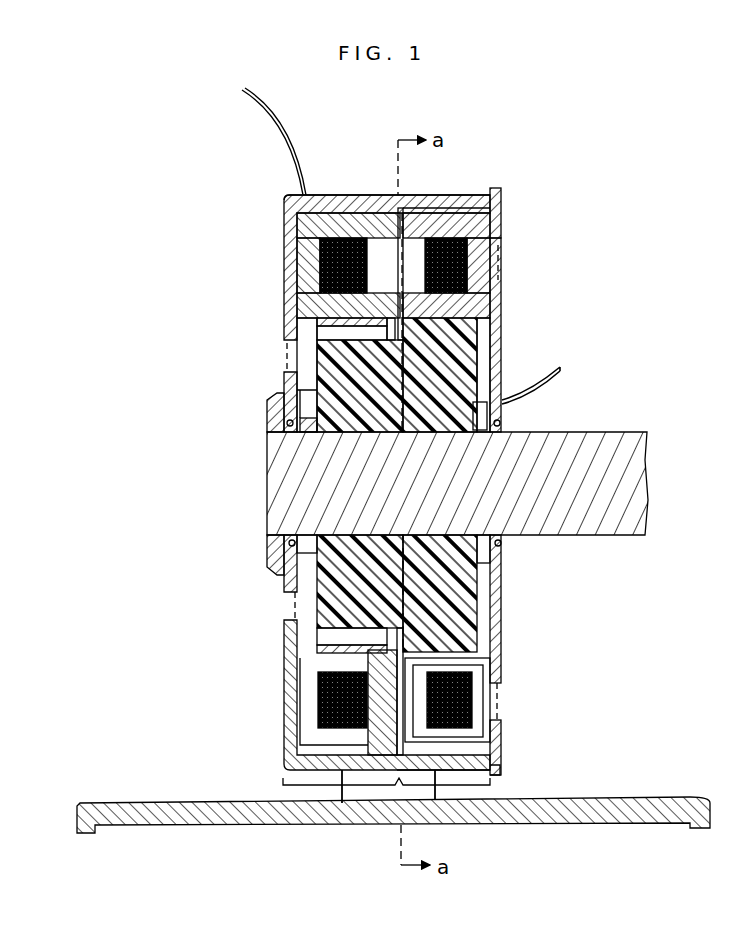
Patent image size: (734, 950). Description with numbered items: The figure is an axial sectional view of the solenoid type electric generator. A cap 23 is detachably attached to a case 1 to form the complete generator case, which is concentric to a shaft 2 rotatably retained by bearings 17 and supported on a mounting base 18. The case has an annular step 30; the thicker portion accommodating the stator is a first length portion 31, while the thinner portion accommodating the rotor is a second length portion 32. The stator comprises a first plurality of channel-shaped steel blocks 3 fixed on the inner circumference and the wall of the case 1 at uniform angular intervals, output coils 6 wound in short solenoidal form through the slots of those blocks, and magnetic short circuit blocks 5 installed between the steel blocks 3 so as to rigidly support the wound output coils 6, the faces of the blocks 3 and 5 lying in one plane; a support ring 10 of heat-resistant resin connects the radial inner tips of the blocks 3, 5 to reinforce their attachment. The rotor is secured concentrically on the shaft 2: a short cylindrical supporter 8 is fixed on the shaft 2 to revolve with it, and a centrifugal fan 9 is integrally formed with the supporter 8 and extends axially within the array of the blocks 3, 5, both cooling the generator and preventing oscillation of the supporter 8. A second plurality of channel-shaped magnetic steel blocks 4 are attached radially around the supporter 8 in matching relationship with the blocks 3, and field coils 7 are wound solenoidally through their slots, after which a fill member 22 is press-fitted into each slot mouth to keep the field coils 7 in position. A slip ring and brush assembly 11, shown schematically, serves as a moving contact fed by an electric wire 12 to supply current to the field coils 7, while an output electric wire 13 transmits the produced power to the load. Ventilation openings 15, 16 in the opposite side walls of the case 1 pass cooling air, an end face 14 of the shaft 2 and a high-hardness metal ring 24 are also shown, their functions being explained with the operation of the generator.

The case 1 is at (312, 203).
The shaft 2 is at (545, 437).
The first plurality of channel-shaped steel blocks 3 is at (337, 205).
The second plurality of channel-shaped magnetic steel blocks 4 is at (495, 257).
The magnetic short circuit blocks 5 is at (408, 265).
The output coils 6 is at (387, 267).
The field coils 7 is at (497, 200).
The supporter 8 is at (478, 335).
The centrifugal fan 9 is at (335, 375).
The support ring 10 is at (318, 320).
The slip ring and brush assembly 11 is at (502, 405).
The electric wire 12 is at (503, 397).
The output electric wire 13 is at (285, 141).
The end face of the shaft 14 is at (273, 490).
The ventilation opening 15 is at (287, 347).
The ventilation opening 16 is at (500, 245).
The bearings 17 is at (287, 415).
The mounting base 18 is at (165, 810).
The fill member 22 is at (493, 190).
The cap 23 is at (498, 352).
The metal ring 24 is at (505, 545).
The annular step 30 is at (505, 765).
The first length portion 31 is at (340, 788).
The second length portion 32 is at (447, 787).